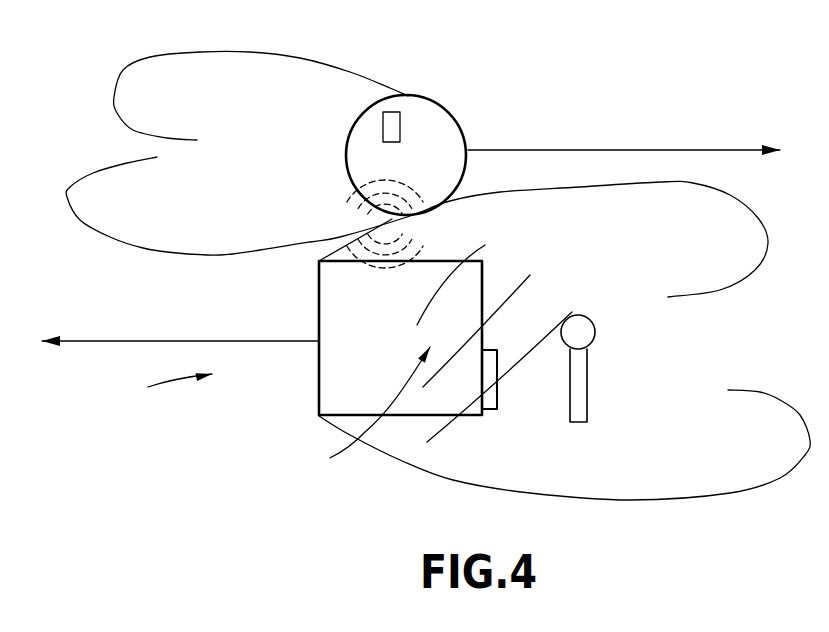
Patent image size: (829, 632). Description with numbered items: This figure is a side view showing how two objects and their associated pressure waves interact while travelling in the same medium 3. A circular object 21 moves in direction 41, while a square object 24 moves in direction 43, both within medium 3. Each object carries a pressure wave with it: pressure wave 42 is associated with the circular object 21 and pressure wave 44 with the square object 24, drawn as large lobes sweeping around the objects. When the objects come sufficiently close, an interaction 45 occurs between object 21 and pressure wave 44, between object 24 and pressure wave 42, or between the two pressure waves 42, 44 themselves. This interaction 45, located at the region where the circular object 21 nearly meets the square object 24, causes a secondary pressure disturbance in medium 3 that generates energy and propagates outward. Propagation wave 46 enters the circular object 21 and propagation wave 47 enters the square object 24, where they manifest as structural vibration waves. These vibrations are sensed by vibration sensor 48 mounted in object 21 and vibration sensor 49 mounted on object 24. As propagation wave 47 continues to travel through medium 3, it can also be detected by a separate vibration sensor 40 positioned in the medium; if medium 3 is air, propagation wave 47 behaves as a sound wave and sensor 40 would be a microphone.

The medium 3 is at (170, 388).
The object 21 is at (442, 120).
The object 24 is at (328, 383).
The vibration sensor 40 is at (595, 333).
The direction 41 is at (617, 150).
The pressure wave 42 is at (217, 253).
The direction 43 is at (205, 341).
The pressure wave 44 is at (640, 497).
The interaction 45 is at (410, 223).
The propagation wave 46 is at (373, 208).
The propagation wave 47 is at (363, 411).
The vibration sensor 48 is at (393, 112).
The vibration sensor 49 is at (490, 408).